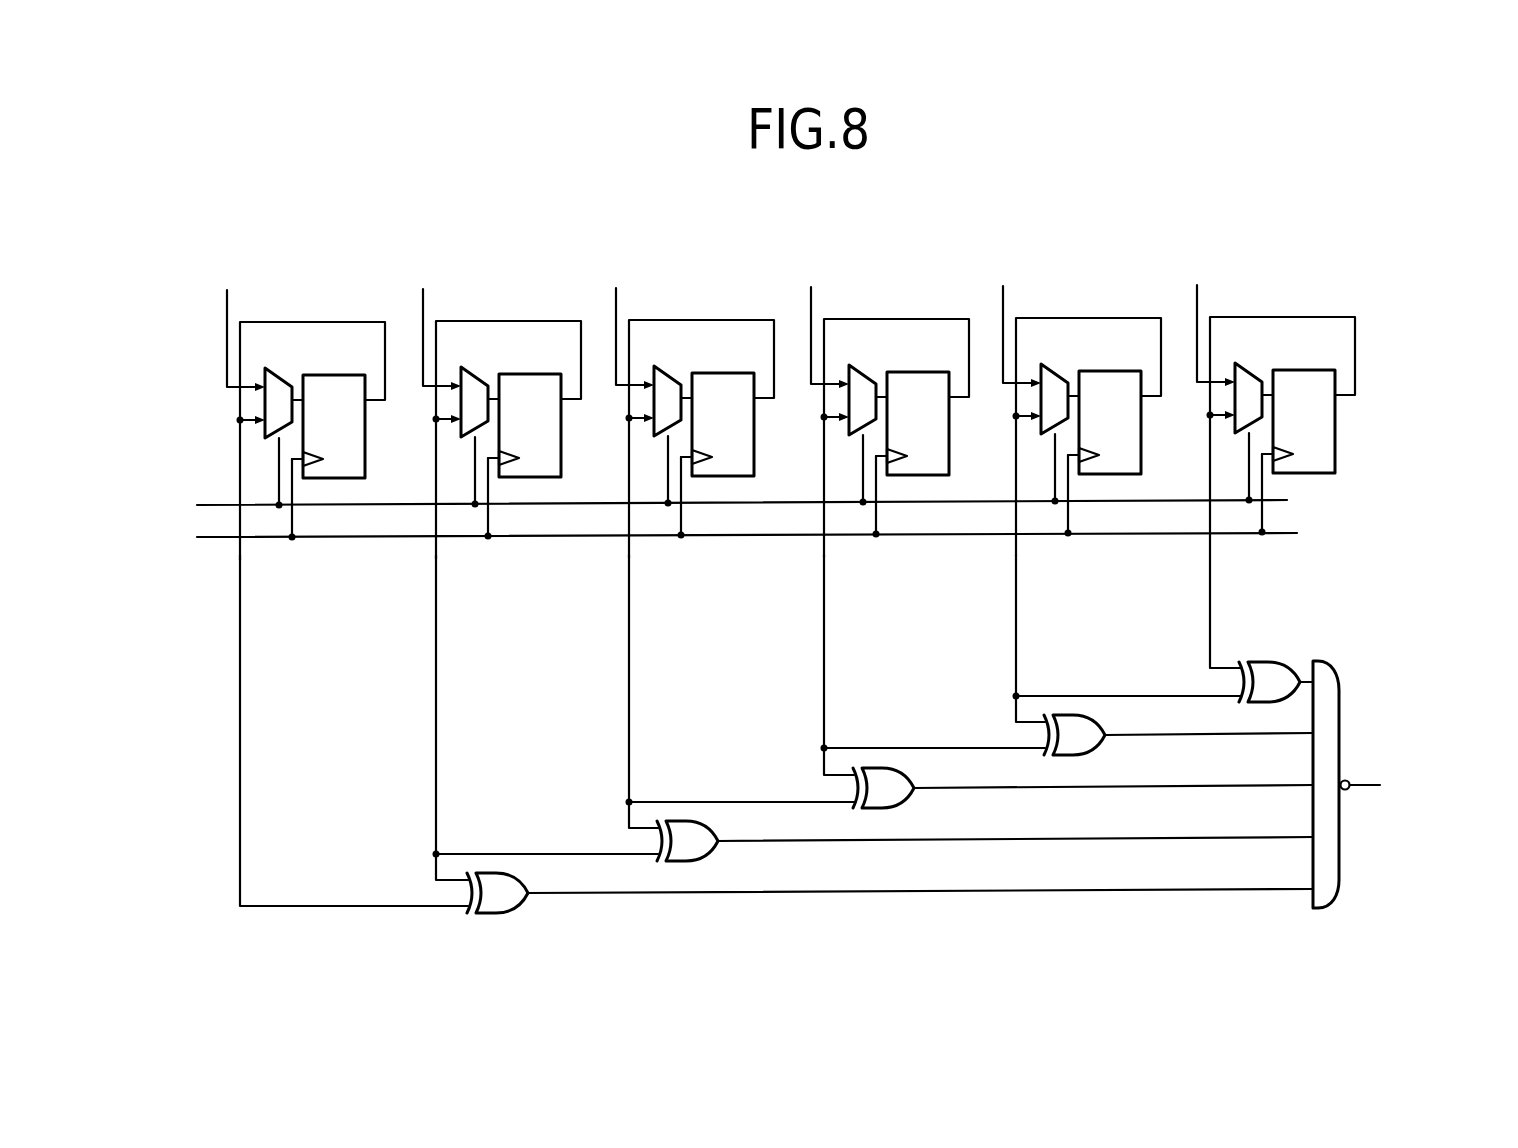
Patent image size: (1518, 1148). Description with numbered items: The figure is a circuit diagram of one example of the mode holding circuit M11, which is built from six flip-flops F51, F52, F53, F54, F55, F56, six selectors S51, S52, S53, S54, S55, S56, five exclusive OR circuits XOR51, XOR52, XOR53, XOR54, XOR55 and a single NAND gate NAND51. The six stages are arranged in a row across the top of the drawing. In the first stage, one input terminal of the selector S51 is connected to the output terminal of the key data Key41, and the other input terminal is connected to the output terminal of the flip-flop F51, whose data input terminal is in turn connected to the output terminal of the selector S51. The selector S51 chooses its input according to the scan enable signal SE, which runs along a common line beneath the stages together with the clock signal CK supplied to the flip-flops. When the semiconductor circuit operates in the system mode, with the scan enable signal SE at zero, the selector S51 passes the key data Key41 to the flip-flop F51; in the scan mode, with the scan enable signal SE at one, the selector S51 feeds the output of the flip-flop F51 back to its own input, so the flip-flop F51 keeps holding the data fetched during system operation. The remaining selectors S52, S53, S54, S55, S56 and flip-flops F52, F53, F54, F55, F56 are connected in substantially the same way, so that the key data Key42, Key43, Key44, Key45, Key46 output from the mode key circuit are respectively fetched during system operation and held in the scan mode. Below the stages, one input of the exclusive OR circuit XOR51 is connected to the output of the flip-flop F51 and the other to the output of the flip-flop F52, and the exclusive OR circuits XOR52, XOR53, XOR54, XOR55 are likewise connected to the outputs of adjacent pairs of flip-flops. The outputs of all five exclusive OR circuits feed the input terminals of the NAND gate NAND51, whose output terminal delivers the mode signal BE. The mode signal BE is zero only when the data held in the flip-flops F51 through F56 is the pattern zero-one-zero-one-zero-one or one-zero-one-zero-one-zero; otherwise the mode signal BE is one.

The mode holding circuit M11 is at (387, 203).
The key data Key41 is at (242, 321).
The key data Key42 is at (438, 320).
The key data Key43 is at (631, 319).
The key data Key44 is at (826, 318).
The key data Key45 is at (1018, 317).
The key data Key46 is at (1212, 316).
The selector S51 is at (273, 368).
The selector S52 is at (469, 368).
The selector S53 is at (662, 368).
The selector S54 is at (857, 368).
The selector S55 is at (1049, 368).
The selector S56 is at (1243, 368).
The flip-flop F51 is at (367, 462).
The flip-flop F52 is at (563, 462).
The flip-flop F53 is at (756, 462).
The flip-flop F54 is at (951, 462).
The flip-flop F55 is at (1143, 462).
The flip-flop F56 is at (1337, 462).
The exclusive OR circuit XOR51 is at (522, 901).
The exclusive OR circuit XOR52 is at (714, 848).
The exclusive OR circuit XOR53 is at (910, 795).
The exclusive OR circuit XOR54 is at (1101, 742).
The exclusive OR circuit XOR55 is at (1272, 662).
The NAND gate NAND51 is at (1342, 690).
The scan enable signal SE is at (722, 503).
The clock signal CK is at (727, 537).
The mode signal BE is at (1381, 784).